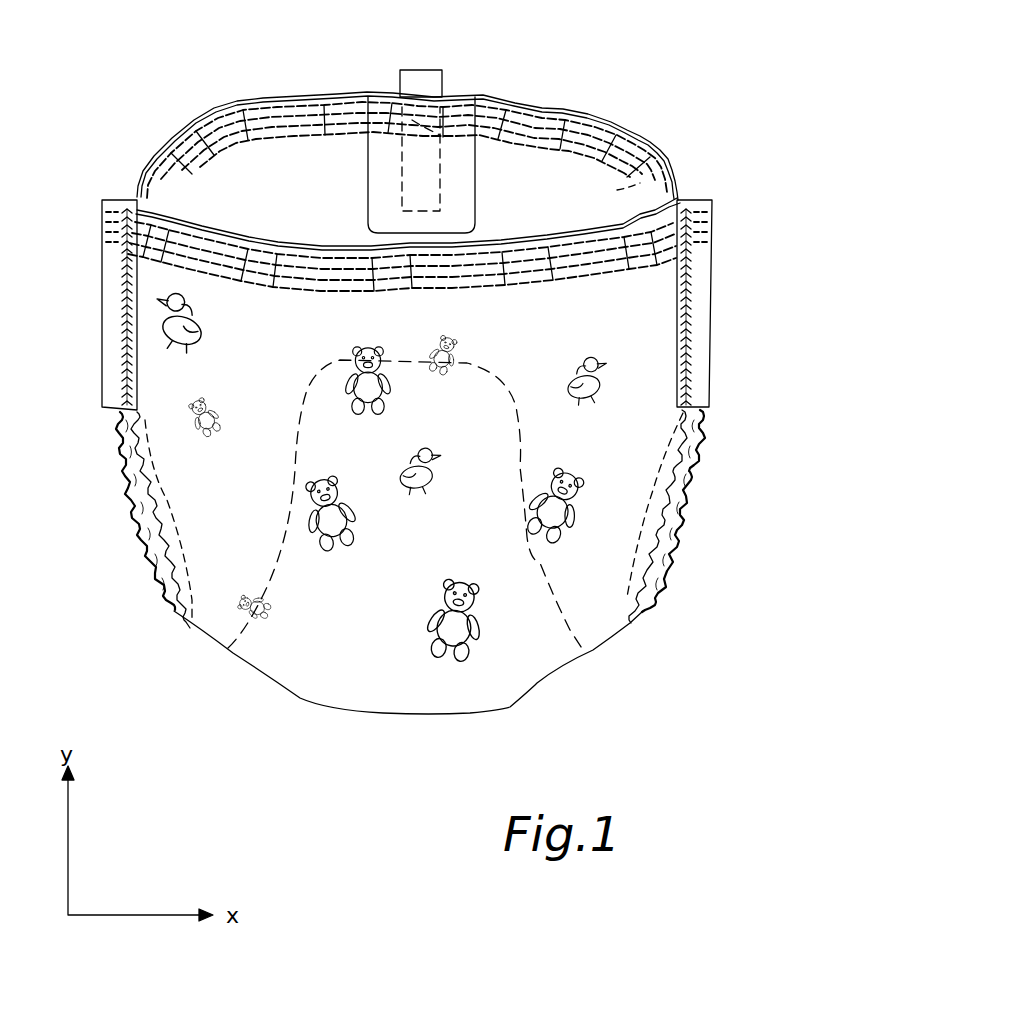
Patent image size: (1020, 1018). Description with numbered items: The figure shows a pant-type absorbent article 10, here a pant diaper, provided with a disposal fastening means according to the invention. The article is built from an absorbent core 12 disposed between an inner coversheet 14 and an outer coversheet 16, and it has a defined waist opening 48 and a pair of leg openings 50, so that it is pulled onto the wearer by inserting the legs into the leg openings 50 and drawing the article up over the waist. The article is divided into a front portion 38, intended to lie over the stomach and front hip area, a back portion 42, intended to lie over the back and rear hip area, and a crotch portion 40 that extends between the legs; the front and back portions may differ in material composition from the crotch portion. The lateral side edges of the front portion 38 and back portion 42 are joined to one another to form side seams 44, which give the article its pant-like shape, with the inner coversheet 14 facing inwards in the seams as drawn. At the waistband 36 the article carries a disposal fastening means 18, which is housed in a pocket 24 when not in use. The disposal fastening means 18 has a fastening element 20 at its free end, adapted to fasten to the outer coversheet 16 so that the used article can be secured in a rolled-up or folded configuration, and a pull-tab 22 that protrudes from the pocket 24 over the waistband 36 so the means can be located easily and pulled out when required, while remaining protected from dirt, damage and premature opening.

The absorbent article 10 is at (620, 45).
The absorbent core 12 is at (516, 655).
The inner coversheet 14 is at (273, 163).
The outer coversheet 16 is at (200, 462).
The disposal fastening means 18 is at (425, 183).
The fastening element 20 is at (440, 135).
The pull-tab 22 is at (426, 76).
The pocket 24 is at (384, 190).
The waistband 36 is at (210, 127).
The front portion 38 is at (297, 345).
The crotch portion 40 is at (348, 642).
The back portion 42 is at (655, 142).
The side seams 44 is at (109, 331).
The waist opening 48 is at (527, 87).
The leg openings 50 is at (116, 540).